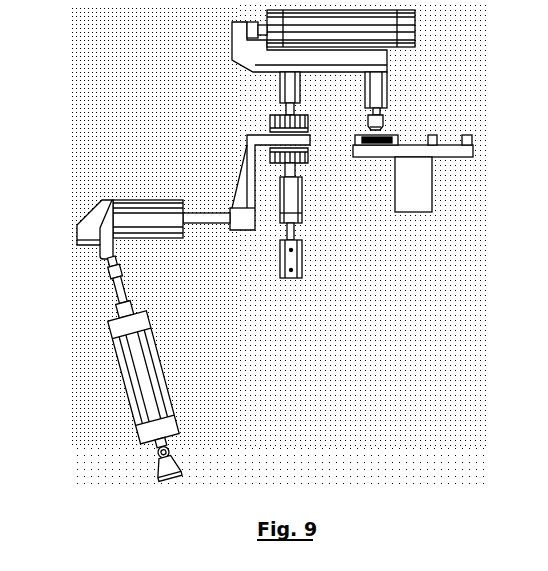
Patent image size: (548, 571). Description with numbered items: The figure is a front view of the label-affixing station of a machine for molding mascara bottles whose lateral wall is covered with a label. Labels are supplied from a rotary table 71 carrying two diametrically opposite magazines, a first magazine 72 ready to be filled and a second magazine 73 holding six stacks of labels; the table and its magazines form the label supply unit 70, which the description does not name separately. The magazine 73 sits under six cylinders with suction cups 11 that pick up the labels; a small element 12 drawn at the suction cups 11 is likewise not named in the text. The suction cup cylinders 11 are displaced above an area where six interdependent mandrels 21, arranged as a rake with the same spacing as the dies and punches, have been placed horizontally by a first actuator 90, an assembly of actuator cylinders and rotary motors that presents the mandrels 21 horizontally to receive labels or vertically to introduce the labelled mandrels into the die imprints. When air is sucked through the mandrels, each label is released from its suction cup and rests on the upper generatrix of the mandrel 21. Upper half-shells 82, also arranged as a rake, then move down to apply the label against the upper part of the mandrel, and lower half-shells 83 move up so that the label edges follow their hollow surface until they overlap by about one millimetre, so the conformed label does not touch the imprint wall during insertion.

The suction cup cylinder 11 is at (382, 128).
The second workpiece 12 is at (384, 131).
The mandrel 21 is at (310, 140).
The positioning device 70 is at (417, 201).
The rotary table 71 is at (422, 182).
The magazine 72 is at (450, 138).
The magazine 73 is at (378, 141).
The upper clamping jaw 82 is at (270, 127).
The lower half-shell 83 is at (298, 152).
The first actuator 90 is at (86, 181).